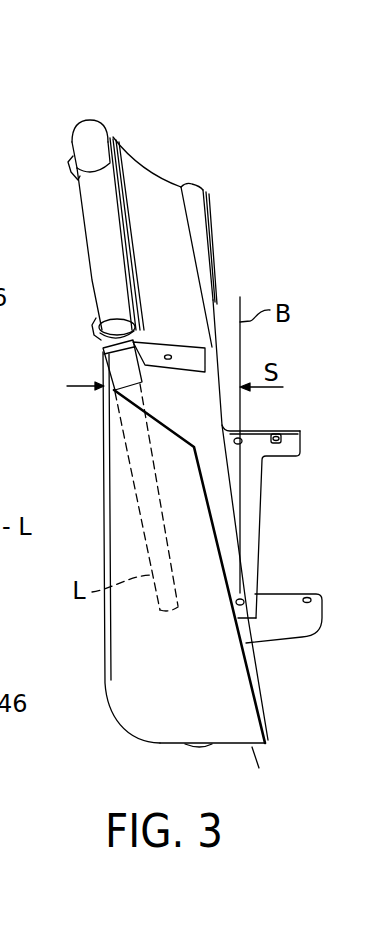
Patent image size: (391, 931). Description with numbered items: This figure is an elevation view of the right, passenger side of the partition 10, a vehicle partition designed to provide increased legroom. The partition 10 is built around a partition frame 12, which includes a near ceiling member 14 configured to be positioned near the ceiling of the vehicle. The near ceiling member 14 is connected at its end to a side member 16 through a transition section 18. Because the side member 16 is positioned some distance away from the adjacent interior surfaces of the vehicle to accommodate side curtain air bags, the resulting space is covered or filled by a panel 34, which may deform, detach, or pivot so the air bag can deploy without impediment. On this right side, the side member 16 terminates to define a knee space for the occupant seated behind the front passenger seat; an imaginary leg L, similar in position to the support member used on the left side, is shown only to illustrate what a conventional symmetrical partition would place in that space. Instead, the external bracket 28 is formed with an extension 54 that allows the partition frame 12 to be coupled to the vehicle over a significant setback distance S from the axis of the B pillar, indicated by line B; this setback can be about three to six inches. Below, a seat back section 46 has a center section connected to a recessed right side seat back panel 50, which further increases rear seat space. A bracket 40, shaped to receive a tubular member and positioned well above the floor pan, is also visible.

The partition 10 is at (242, 148).
The partition frame 12 is at (100, 110).
The near ceiling member 14 is at (79, 122).
The side member 16 is at (85, 240).
The transition section 18 is at (72, 138).
The external bracket 28 is at (258, 520).
The panel 34 is at (213, 270).
The bracket 40 is at (318, 610).
The seat back section 46 is at (130, 728).
The recessed right side seat back panel 50 is at (243, 670).
The extension 54 is at (177, 370).